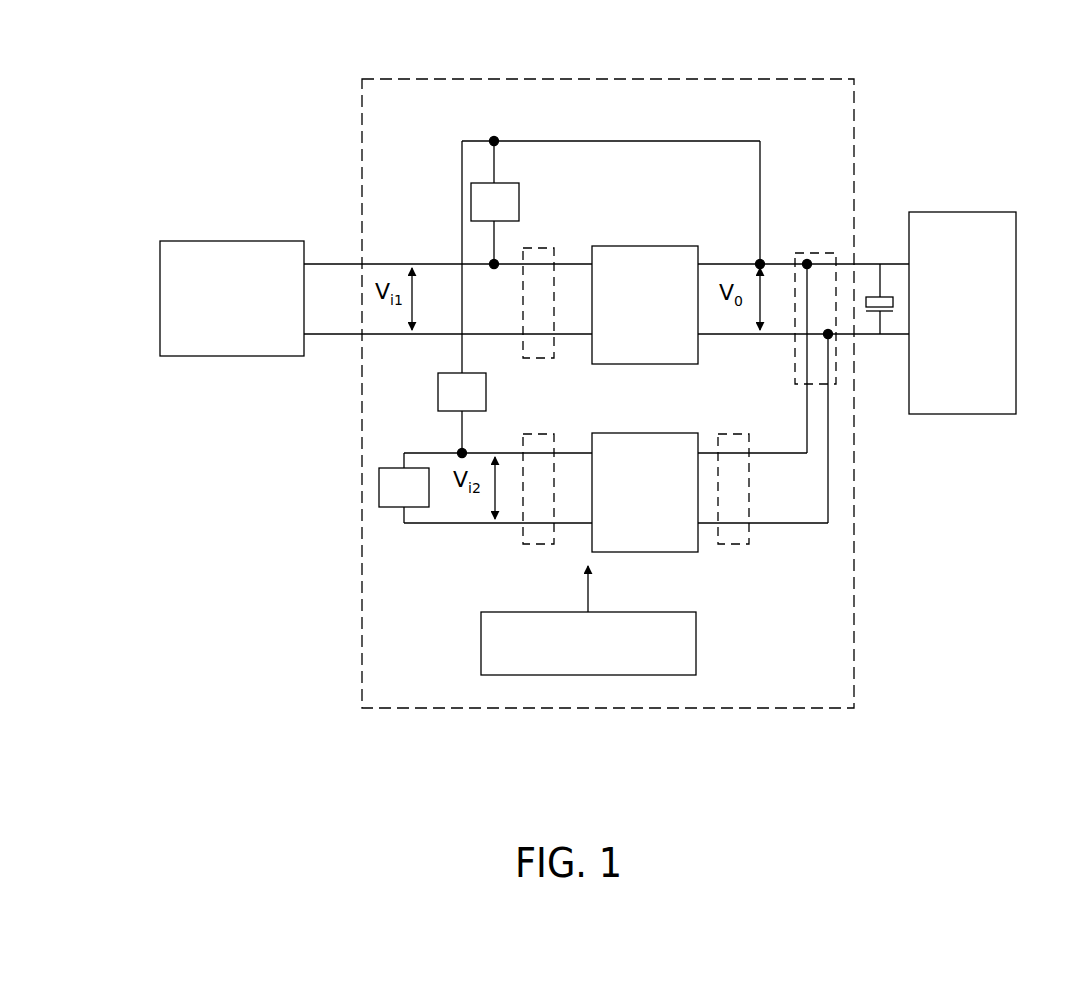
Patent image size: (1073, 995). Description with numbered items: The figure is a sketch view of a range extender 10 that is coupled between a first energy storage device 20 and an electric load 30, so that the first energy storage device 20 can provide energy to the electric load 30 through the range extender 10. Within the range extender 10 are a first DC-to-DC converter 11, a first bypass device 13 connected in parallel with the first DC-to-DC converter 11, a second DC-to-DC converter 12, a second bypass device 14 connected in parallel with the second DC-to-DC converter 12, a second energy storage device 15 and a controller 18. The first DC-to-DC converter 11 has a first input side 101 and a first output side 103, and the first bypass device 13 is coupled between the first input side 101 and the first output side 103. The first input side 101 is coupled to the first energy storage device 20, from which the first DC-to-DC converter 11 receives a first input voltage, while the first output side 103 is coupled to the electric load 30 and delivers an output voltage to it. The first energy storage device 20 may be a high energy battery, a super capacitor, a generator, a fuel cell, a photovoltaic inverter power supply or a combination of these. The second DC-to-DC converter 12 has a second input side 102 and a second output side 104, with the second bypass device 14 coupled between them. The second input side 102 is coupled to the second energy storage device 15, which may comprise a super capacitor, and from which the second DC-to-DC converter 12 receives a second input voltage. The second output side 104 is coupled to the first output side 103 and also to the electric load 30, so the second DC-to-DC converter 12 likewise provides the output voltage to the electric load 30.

The range extender 10 is at (468, 79).
The first DC-to-DC converter 11 is at (683, 246).
The second DC-to-DC converter 12 is at (645, 433).
The first bypass device 13 is at (519, 191).
The second bypass device 14 is at (486, 392).
The second energy storage device 15 is at (391, 507).
The controller 18 is at (628, 612).
The first energy storage device 20 is at (232, 241).
The electric load 30 is at (963, 212).
The first input side 101 is at (539, 248).
The second input side 102 is at (538, 434).
The first output side 103 is at (812, 253).
The second output side 104 is at (733, 434).